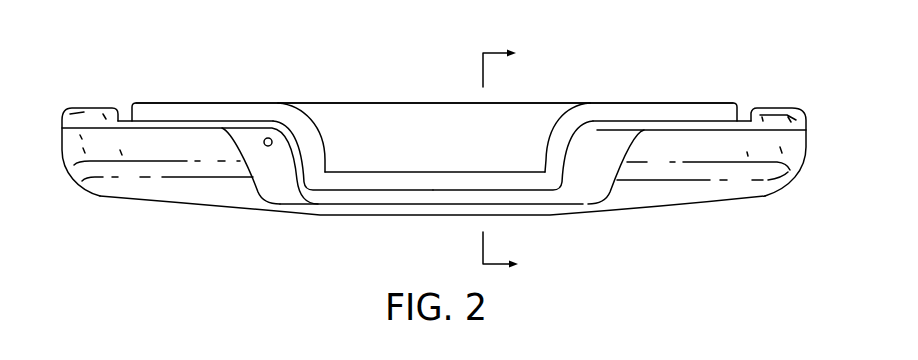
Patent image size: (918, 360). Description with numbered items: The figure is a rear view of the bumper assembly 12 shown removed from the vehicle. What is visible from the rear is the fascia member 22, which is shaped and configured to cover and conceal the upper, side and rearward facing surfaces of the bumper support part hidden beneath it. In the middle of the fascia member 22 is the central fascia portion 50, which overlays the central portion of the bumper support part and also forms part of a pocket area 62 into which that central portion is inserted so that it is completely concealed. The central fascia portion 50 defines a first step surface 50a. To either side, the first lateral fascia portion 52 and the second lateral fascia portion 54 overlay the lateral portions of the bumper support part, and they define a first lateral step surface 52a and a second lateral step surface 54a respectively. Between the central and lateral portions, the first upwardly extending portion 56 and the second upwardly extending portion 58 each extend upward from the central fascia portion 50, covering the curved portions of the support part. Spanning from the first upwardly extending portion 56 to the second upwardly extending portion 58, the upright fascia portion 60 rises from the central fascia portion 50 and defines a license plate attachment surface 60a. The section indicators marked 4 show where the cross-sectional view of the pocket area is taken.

The section line 4- 4 is at (510, 159).
The bumper assembly 12 is at (651, 52).
The fascia member 22 is at (713, 98).
The central fascia portion 50 is at (362, 190).
The first step surface 50a is at (480, 190).
The first lateral fascia portion 52 is at (170, 108).
The first lateral step surface 52a is at (248, 108).
The second lateral fascia portion 54 is at (680, 108).
The second lateral step surface 54a is at (610, 108).
The first upwardly extending portion 56 is at (307, 150).
The second upwardly extending portion 58 is at (560, 152).
The upright fascia portion 60 is at (438, 142).
The license plate attachment surface 60a is at (395, 130).
The pocket area 62 is at (380, 215).